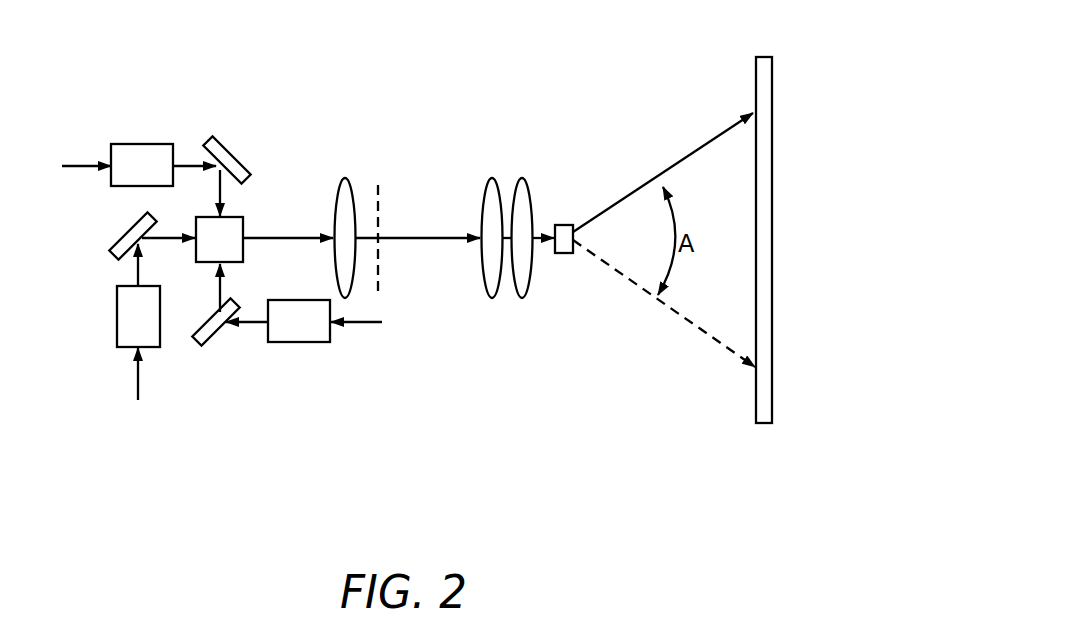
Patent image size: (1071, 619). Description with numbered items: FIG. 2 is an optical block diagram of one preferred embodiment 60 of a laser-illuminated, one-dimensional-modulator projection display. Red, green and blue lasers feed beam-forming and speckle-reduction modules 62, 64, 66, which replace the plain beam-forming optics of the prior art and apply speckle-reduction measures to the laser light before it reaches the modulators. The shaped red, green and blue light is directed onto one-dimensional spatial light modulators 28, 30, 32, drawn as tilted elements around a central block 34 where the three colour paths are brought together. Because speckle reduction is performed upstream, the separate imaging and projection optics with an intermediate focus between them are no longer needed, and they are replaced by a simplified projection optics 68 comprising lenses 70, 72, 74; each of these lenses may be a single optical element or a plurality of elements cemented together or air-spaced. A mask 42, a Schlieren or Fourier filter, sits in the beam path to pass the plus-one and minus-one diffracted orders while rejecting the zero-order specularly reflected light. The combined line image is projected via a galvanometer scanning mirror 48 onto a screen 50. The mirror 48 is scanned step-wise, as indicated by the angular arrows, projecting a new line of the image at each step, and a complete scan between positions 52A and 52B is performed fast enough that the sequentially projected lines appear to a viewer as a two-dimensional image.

The one-dimensional spatial light modulator 28 is at (229, 136).
The one-dimensional spatial light modulator 30 is at (200, 329).
The one-dimensional spatial light modulator 32 is at (110, 248).
The beam combiner 34 is at (230, 230).
The mask 42 is at (378, 267).
The galvanometer scanning mirror 48 is at (567, 222).
The screen 50 is at (760, 73).
The scan position 52A is at (707, 145).
The scan position 52B is at (668, 307).
The one-dimensional-modulator projection display 60 is at (535, 470).
The beam-forming and speckle-reduction module 62 is at (137, 140).
The beam-forming and speckle-reduction module 64 is at (116, 323).
The beam-forming and speckle-reduction module 66 is at (300, 344).
The projection optics 68 is at (533, 153).
The lens 70 is at (348, 297).
The lens 72 is at (493, 297).
The lens 74 is at (528, 288).